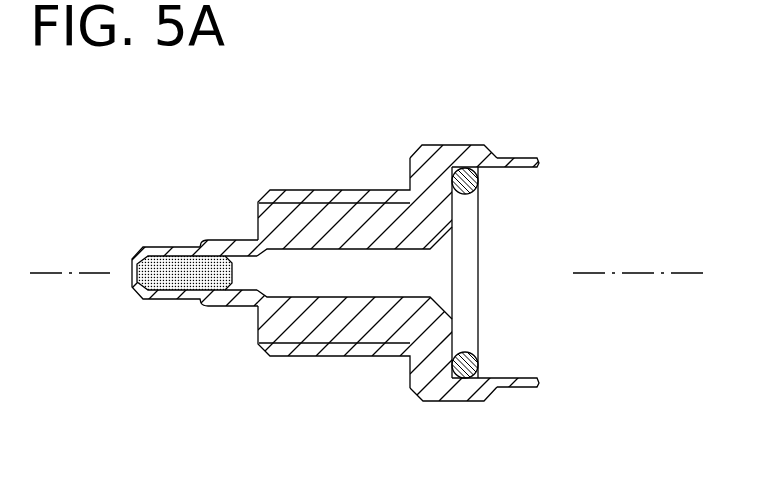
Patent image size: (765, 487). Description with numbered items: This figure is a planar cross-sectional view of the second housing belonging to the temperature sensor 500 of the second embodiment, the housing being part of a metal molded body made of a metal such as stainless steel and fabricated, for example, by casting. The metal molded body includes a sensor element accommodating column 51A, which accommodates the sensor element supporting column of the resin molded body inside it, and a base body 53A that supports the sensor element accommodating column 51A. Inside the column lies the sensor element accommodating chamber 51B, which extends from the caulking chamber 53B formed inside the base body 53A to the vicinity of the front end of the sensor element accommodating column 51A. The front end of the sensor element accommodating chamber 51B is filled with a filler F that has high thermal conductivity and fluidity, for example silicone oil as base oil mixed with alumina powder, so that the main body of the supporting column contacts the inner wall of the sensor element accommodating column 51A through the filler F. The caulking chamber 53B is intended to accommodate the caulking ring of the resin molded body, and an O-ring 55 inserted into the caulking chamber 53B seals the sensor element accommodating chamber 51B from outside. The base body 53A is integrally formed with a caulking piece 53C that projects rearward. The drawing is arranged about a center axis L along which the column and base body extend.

The temperature sensor 500 is at (548, 150).
The sensor element accommodating column 51A is at (212, 238).
The sensor element accommodating chamber 51B is at (316, 240).
The base body 53A is at (458, 144).
The caulking chamber 53B is at (542, 288).
The caulking piece 53C is at (520, 157).
The O-ring 55 is at (480, 328).
The filler F is at (185, 280).
The axis line L is at (58, 274).